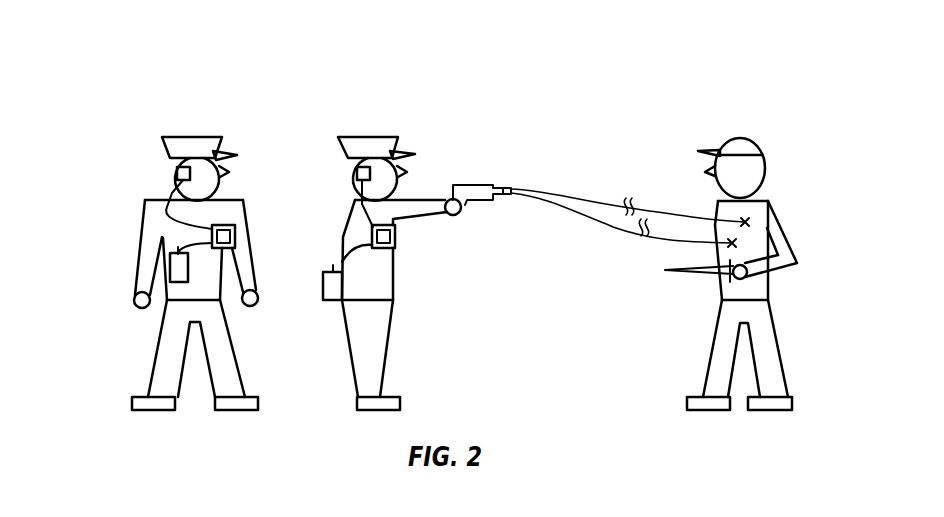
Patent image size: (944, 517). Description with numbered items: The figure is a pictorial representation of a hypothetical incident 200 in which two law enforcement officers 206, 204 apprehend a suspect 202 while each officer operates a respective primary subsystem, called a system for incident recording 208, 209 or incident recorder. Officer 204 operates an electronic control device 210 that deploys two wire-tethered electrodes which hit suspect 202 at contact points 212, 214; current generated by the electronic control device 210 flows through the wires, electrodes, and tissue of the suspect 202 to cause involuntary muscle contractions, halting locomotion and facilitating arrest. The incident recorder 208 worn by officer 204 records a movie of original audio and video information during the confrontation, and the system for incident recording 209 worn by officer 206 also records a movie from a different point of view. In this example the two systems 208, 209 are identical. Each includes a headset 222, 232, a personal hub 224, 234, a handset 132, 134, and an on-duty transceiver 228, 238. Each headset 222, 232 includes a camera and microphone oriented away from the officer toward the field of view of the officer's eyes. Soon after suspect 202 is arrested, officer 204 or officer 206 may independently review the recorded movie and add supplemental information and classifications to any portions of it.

The environment / system 200 is at (109, 53).
The suspect 202 is at (743, 137).
The officer 204 is at (374, 135).
The officer 206 is at (193, 135).
The system for incident recording 208 is at (411, 339).
The system for incident recording 209 is at (251, 140).
The electronic control device 210 is at (474, 185).
The contact point 212 is at (749, 220).
The contact point 214 is at (736, 242).
The headset 222 is at (357, 173).
The personal hub 224 is at (397, 233).
The handset 132 is at (393, 243).
The on-duty transceiver 228 is at (322, 280).
The headset 232 is at (177, 172).
The personal hub 234 is at (237, 227).
The handset 134 is at (231, 237).
The on-duty transceiver 238 is at (171, 262).